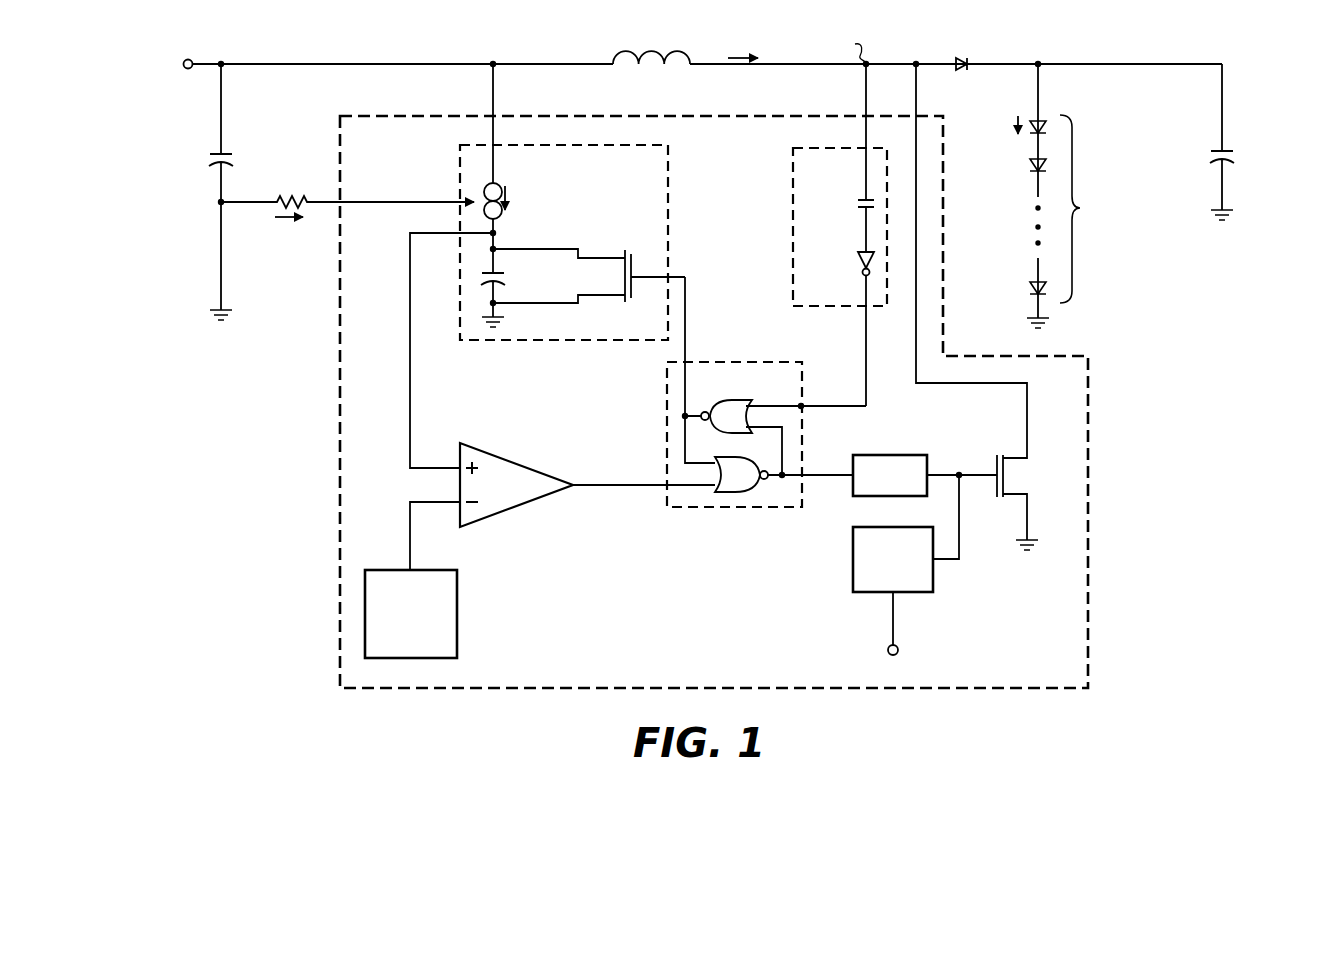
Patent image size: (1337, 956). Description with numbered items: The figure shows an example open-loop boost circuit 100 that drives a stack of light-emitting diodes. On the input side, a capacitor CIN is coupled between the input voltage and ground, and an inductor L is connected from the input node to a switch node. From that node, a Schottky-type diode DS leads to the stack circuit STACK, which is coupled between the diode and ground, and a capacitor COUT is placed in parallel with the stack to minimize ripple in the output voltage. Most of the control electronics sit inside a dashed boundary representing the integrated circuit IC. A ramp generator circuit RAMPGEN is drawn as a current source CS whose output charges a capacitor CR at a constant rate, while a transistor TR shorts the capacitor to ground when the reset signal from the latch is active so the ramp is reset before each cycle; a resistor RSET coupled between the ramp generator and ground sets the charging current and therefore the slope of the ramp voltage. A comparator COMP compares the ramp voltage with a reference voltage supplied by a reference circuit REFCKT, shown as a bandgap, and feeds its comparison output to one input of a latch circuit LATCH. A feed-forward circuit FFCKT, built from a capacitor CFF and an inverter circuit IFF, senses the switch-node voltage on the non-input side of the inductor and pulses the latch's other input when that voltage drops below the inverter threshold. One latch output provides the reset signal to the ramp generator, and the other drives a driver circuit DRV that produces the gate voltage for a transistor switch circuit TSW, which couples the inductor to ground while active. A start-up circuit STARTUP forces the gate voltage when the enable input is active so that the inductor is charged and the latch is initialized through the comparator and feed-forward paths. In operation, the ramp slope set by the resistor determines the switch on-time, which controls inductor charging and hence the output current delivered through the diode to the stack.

The open-loop boost circuit 100 is at (1147, 45).
The inductor L is at (651, 48).
The capacitor CIN is at (201, 192).
The resistor RSET is at (347, 212).
The integrated circuit IC is at (714, 402).
The ramp generator circuit RAMPGEN is at (572, 202).
The current source CS is at (518, 148).
The capacitor CR is at (507, 278).
The transistor TR is at (589, 276).
The comparator COMP is at (516, 485).
The reference circuit REFCKT is at (411, 614).
The latch circuit LATCH is at (766, 434).
The driver circuit DRV is at (925, 475).
The transistor switch circuit TSW is at (982, 307).
The start-up circuit STARTUP is at (906, 568).
The feed-forward circuit FFCKT is at (840, 235).
The capacitor CFF is at (843, 158).
The inverter circuit IFF is at (851, 329).
The Schottky-type diode DS is at (967, 64).
The stack circuit STACK is at (1071, 196).
The capacitor COUT is at (1252, 142).